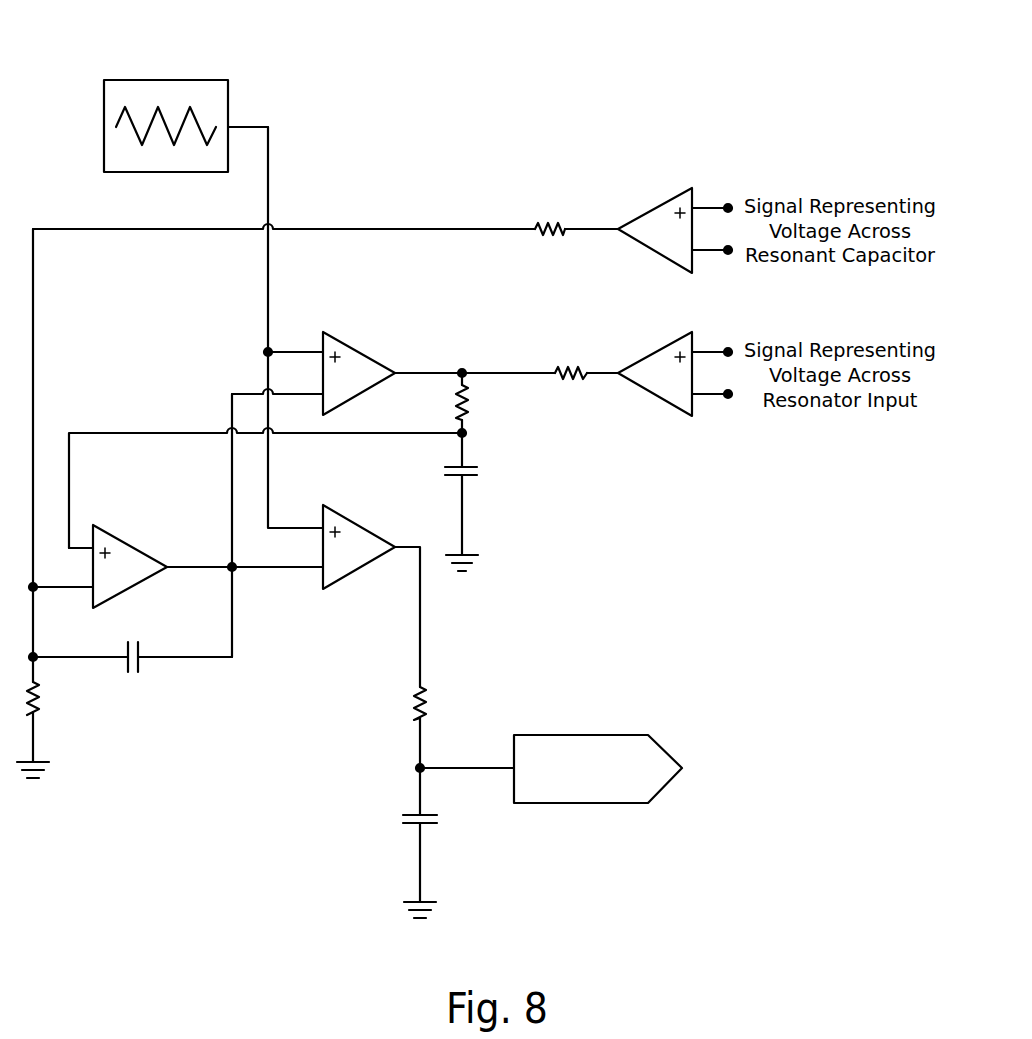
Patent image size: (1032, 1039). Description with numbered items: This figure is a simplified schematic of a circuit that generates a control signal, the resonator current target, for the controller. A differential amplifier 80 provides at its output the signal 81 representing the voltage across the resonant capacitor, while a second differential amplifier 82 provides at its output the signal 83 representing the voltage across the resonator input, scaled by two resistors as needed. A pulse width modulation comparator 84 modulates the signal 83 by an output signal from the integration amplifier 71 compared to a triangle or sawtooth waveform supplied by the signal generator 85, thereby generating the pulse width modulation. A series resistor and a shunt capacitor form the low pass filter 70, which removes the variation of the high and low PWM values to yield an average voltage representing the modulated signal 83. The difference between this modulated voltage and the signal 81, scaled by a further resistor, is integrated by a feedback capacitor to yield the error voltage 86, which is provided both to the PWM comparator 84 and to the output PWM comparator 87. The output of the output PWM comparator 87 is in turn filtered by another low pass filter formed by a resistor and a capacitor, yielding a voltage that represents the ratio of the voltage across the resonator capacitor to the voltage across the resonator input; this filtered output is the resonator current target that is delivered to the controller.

The low pass filter 70 is at (512, 449).
The integration amplifier 71 is at (110, 420).
The differential amplifier 80 is at (625, 180).
The signal representing the voltage across resonant capacitor 81 is at (442, 228).
The differential amplifier 82 is at (648, 425).
The signal representing the voltage across the resonator input 83 is at (465, 362).
The pulse width modulation comparator 84 is at (352, 327).
The signal generator 85 is at (172, 78).
The error voltage 86 is at (222, 553).
The output PWM comparator 87 is at (338, 597).